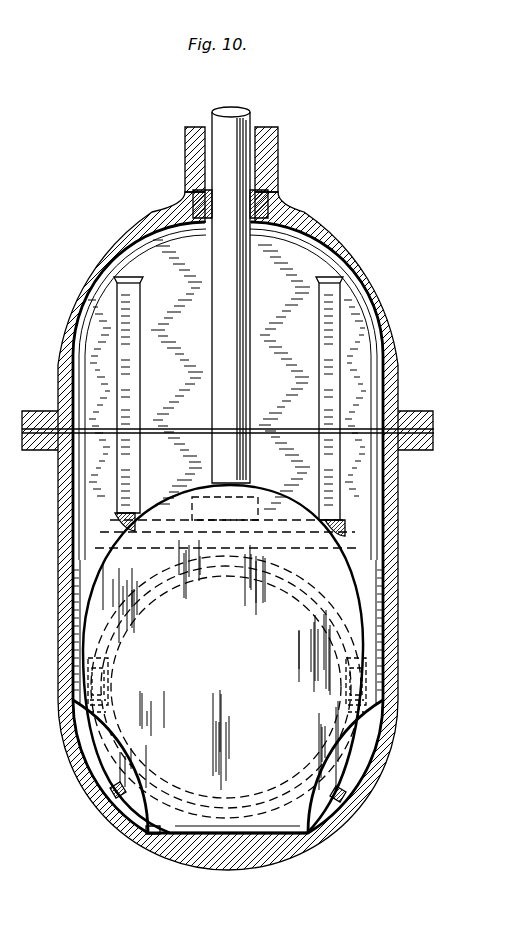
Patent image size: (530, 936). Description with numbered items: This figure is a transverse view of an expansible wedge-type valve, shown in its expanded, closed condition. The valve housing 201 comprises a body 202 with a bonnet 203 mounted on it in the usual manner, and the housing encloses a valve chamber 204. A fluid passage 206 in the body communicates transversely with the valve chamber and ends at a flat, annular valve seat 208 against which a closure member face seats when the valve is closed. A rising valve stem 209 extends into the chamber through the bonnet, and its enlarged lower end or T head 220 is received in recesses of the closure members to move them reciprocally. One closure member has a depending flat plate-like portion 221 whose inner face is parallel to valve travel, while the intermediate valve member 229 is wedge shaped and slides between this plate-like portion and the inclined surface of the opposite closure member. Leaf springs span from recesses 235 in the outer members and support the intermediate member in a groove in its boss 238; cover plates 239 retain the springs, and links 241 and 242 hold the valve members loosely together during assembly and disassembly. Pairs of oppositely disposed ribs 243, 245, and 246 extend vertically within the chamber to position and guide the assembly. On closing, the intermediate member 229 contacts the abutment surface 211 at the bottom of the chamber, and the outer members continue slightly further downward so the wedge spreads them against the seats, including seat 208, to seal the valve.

The valve housing 201 is at (353, 234).
The body 202 is at (325, 842).
The bonnet 203 is at (282, 182).
The valve chamber 204 is at (360, 304).
The fluid passage 206 is at (372, 640).
The valve seat 208 is at (296, 600).
The valve stem 209 is at (250, 118).
The abutment surface 211 is at (150, 836).
The T head 220 is at (258, 492).
The plate-like portion 221 is at (86, 595).
The intermediate valve member 229 is at (300, 820).
The recess 235 is at (106, 684).
The boss 238 is at (110, 662).
The cover plate 239 is at (108, 708).
The link 241 is at (122, 527).
The link 242 is at (110, 790).
The rib 243 is at (72, 345).
The rib 245 is at (320, 324).
The rib 246 is at (130, 330).